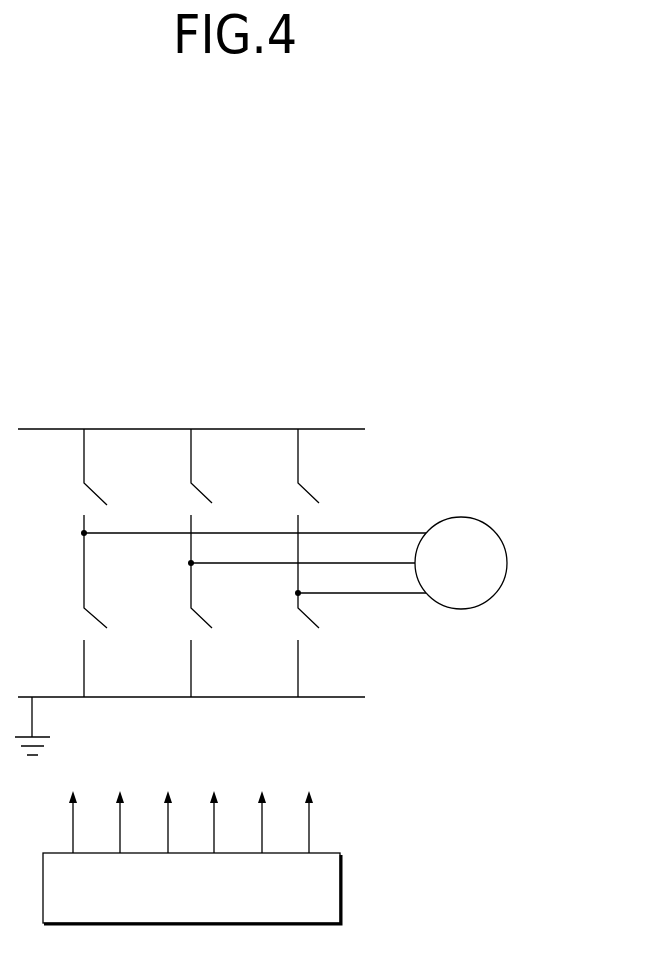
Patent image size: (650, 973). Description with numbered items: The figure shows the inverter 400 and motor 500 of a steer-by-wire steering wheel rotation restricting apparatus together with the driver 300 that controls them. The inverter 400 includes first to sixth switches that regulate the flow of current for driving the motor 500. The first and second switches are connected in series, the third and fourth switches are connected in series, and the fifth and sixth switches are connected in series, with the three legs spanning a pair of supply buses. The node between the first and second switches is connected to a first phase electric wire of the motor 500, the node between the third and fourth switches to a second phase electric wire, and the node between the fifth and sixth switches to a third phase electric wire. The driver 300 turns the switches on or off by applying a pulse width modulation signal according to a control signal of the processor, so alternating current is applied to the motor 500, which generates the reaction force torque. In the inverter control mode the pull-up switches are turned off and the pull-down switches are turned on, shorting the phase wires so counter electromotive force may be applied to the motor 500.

The driver 300 is at (344, 884).
The inverter 400 is at (364, 407).
The motor 500 is at (494, 520).